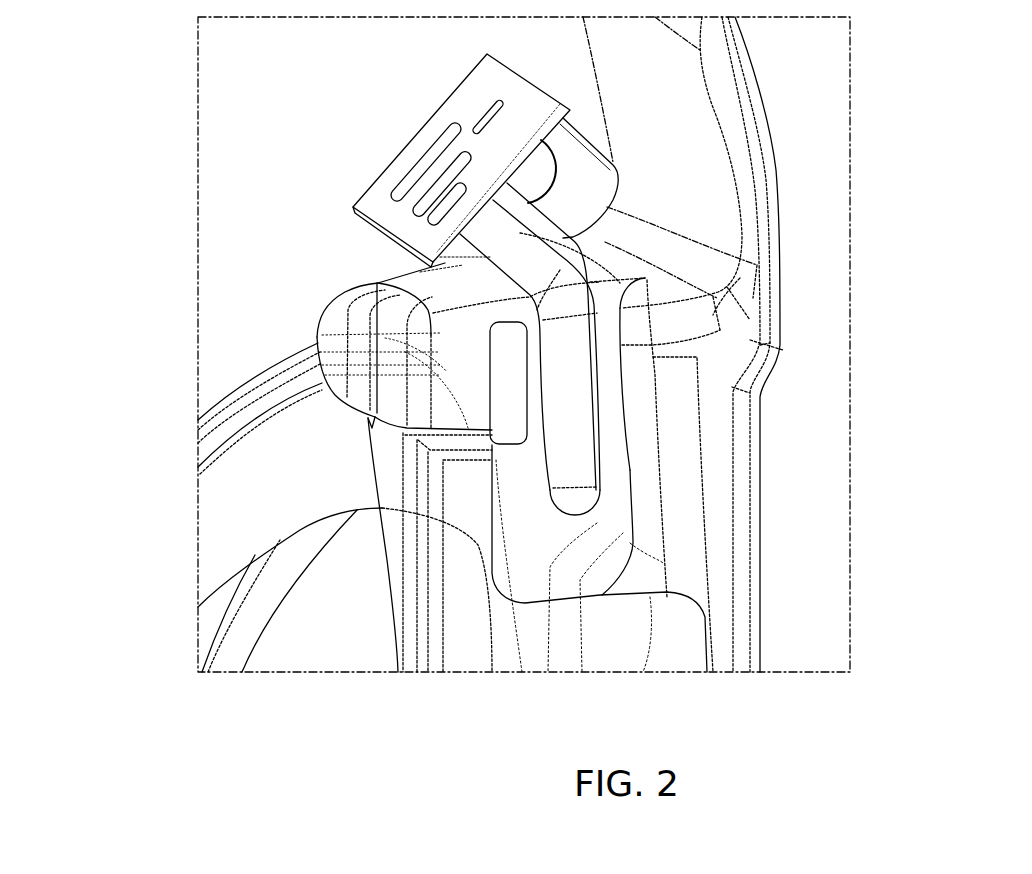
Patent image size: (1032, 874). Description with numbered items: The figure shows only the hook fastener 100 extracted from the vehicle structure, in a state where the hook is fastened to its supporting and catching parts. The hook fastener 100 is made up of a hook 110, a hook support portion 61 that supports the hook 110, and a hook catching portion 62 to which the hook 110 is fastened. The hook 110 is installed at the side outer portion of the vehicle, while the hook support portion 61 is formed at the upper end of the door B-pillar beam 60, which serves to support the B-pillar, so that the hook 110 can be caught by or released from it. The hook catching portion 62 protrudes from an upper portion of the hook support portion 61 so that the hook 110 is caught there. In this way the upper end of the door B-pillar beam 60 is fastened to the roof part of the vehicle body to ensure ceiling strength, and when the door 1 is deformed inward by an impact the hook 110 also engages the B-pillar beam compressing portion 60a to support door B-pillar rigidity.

The door 1 is at (376, 128).
The door B-pillar beam 60 is at (714, 598).
The B-pillar beam compressing portion 60a is at (683, 437).
The hook fastener 100 is at (102, 109).
The hook 110 is at (434, 186).
The hook support portion 61 is at (395, 487).
The hook catching portion 62 is at (375, 333).